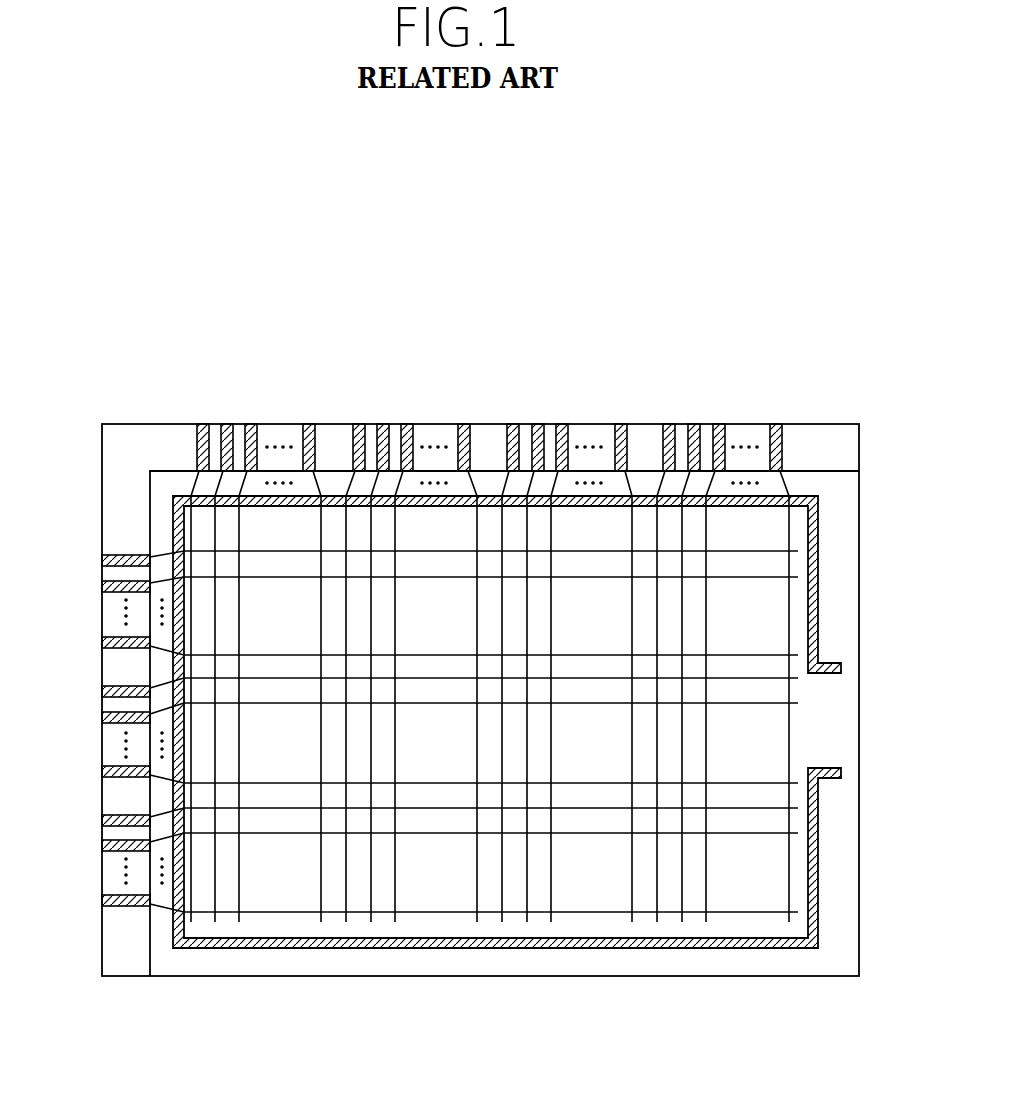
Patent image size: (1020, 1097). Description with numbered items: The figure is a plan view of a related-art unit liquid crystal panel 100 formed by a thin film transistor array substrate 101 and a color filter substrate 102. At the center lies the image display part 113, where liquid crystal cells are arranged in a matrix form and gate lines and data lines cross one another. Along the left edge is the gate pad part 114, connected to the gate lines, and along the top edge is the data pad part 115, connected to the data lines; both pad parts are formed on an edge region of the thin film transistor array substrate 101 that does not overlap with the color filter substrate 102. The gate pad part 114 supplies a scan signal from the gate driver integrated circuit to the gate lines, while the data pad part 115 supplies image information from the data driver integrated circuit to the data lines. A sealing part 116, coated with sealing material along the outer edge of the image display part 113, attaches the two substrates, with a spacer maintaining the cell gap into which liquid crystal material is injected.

The liquid crystal panel 100 is at (133, 410).
The thin film transistor array substrate 101 is at (845, 447).
The color filter substrate 102 is at (848, 513).
The image display part 113 is at (458, 626).
The gate pad part 114 is at (92, 910).
The data pad part 115 is at (787, 408).
The sealing part 116 is at (815, 583).